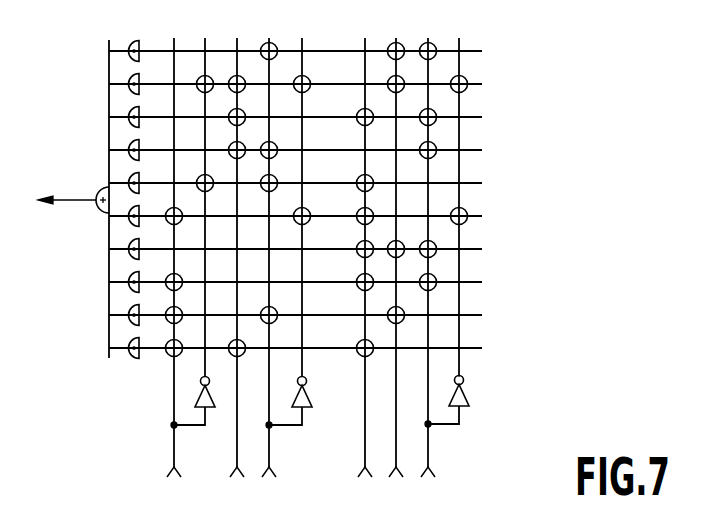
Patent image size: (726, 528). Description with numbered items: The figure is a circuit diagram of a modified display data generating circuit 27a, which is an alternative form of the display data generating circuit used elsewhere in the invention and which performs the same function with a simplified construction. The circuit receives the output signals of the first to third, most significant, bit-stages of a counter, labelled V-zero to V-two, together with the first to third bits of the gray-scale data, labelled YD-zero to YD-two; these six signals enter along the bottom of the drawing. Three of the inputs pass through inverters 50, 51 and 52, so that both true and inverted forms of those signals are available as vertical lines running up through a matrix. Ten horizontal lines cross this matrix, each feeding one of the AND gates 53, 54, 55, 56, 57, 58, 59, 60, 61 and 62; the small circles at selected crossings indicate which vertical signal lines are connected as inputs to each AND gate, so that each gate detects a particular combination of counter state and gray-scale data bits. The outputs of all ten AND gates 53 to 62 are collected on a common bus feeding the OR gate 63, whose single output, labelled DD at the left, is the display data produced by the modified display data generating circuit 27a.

The modified display data generating circuit 27a is at (575, 195).
The inverter 50 is at (215, 409).
The inverter 51 is at (311, 408).
The inverter 52 is at (469, 407).
The AND gate 53 is at (150, 45).
The AND gate 54 is at (150, 78).
The AND gate 55 is at (150, 111).
The AND gate 56 is at (150, 144).
The AND gate 57 is at (150, 177).
The AND gate 58 is at (150, 210).
The AND gate 59 is at (150, 243).
The AND gate 60 is at (150, 276).
The AND gate 61 is at (151, 309).
The AND gate 62 is at (151, 342).
The OR gate 63 is at (99, 213).